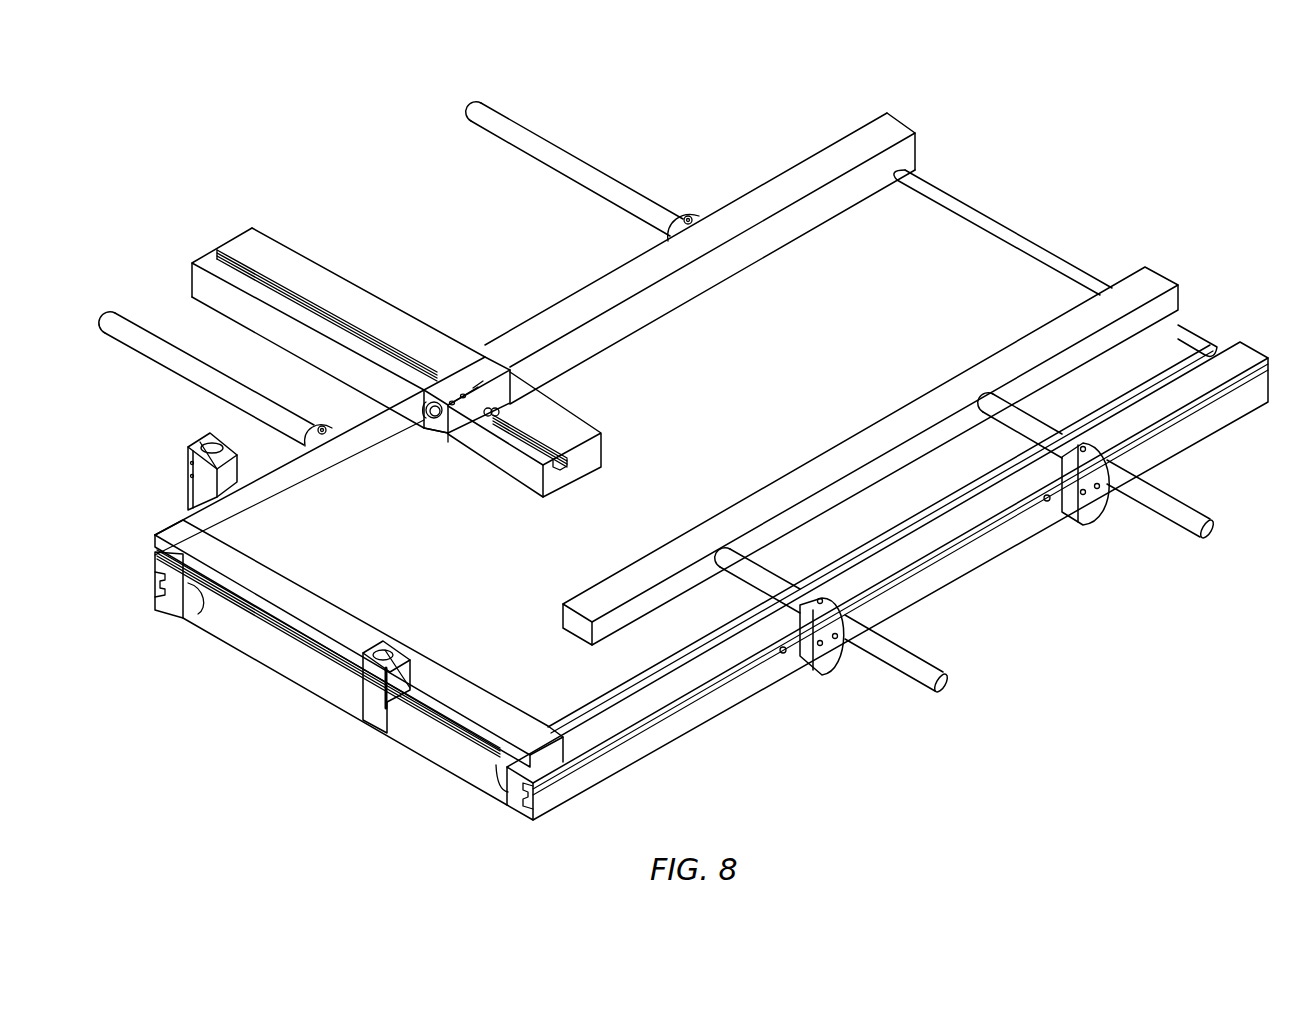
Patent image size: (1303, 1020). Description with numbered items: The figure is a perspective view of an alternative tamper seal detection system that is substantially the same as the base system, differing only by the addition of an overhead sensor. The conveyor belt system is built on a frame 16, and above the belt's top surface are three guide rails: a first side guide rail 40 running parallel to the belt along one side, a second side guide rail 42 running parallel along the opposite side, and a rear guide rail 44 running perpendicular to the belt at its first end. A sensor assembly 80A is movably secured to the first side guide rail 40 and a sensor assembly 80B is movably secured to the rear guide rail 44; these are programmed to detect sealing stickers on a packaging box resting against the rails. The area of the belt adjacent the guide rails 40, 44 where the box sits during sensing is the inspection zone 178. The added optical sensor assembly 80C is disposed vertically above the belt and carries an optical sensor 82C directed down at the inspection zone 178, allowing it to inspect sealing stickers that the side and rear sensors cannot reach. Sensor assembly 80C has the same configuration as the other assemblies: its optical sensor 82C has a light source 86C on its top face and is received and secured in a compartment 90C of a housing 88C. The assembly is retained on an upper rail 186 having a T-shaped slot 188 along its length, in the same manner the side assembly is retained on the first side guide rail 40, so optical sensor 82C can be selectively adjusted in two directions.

The frame 16 is at (950, 578).
The first side guide rail 40 is at (736, 226).
The second side guide rail 42 is at (1140, 293).
The rear guide rail 44 is at (348, 632).
The sensor assembly 80A is at (188, 481).
The sensor assembly 80B is at (363, 690).
The optical sensor assembly 80C is at (533, 382).
The optical sensor 82C is at (455, 430).
The light source 86C is at (425, 418).
The housing 88C is at (477, 356).
The compartment 90C is at (457, 434).
The inspection zone 178 is at (345, 582).
The upper rail 186 is at (315, 283).
The T-slot 188 is at (330, 318).